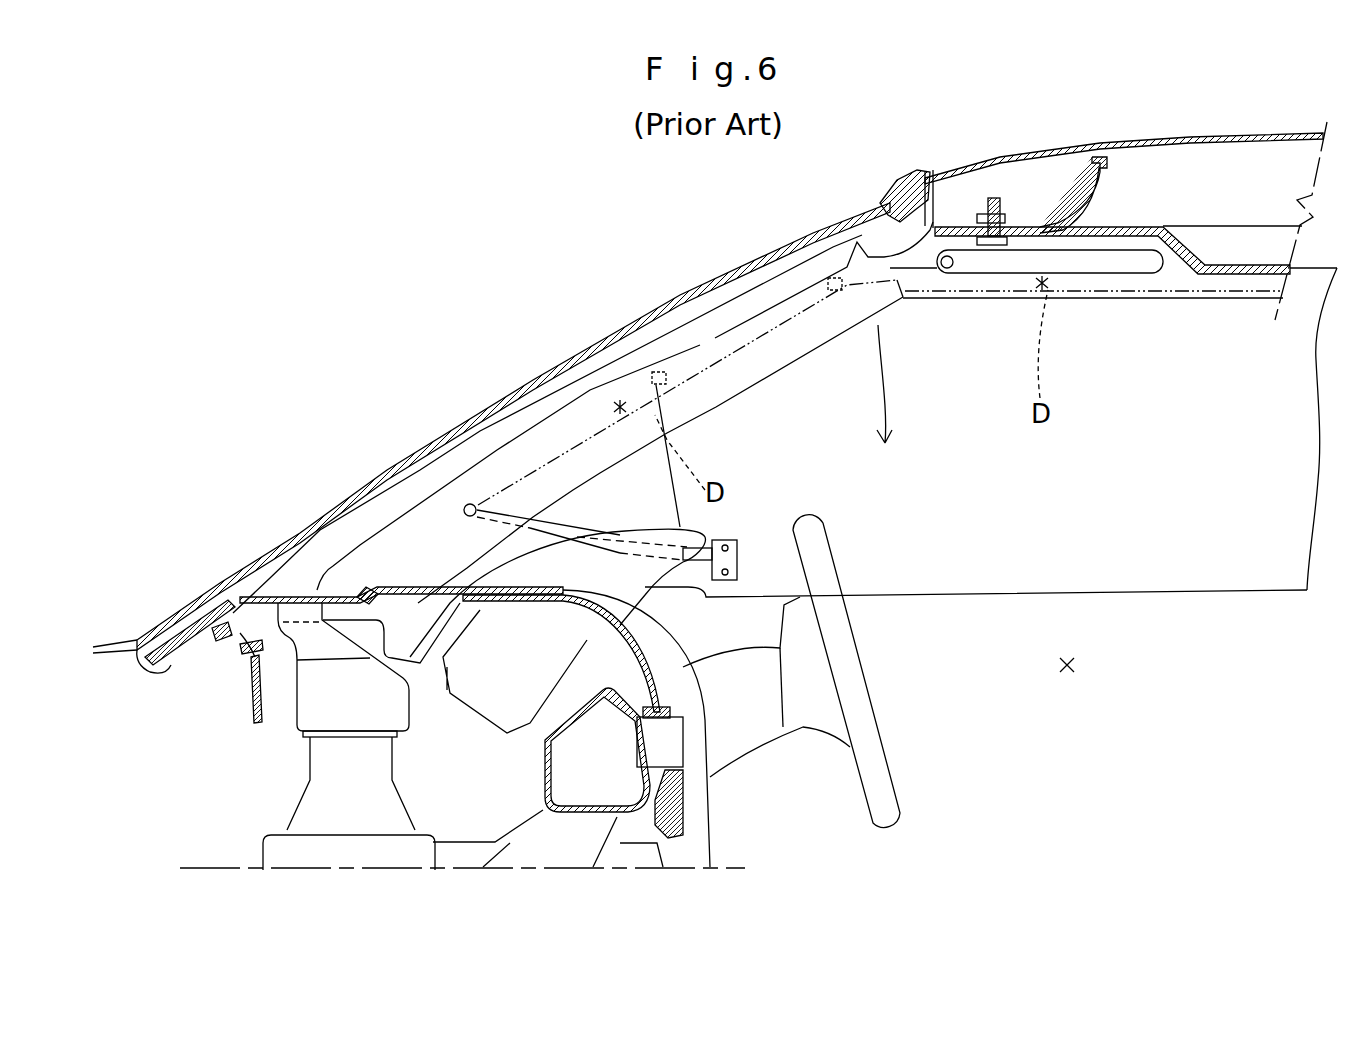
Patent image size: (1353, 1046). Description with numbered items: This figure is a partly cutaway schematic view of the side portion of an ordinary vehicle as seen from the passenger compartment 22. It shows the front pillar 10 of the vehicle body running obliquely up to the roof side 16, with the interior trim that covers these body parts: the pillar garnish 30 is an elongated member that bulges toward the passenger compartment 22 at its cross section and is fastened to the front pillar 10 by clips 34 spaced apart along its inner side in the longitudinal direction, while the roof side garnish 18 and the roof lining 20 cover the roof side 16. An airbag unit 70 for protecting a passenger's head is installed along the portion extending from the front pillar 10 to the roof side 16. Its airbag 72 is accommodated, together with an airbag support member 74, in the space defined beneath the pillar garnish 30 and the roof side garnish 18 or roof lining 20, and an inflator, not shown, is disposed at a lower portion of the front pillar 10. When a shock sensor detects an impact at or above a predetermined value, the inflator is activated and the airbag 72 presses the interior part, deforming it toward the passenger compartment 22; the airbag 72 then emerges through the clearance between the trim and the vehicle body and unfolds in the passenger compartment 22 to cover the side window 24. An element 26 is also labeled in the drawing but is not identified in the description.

The front pillar 10 is at (503, 399).
The roof side 16 is at (1148, 212).
The roof side garnish 18 is at (1196, 311).
The roof lining 20 is at (1256, 292).
The passenger compartment 22 is at (1067, 667).
The side window 24 is at (800, 410).
The windshield glass 26 is at (594, 347).
The pillar garnish 30 is at (716, 299).
The clips 34 is at (656, 375).
The airbag unit 70 is at (1143, 611).
The airbag 72 is at (740, 378).
The airbag support member 74 is at (565, 455).